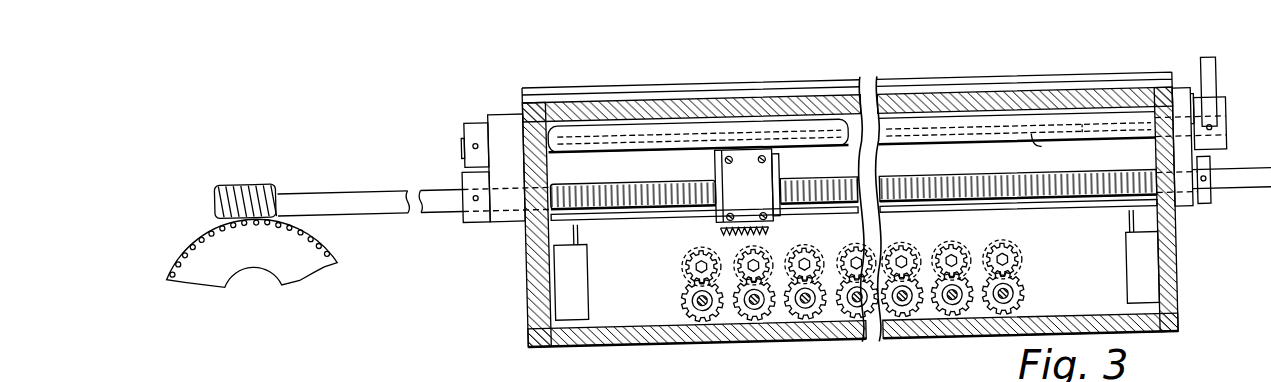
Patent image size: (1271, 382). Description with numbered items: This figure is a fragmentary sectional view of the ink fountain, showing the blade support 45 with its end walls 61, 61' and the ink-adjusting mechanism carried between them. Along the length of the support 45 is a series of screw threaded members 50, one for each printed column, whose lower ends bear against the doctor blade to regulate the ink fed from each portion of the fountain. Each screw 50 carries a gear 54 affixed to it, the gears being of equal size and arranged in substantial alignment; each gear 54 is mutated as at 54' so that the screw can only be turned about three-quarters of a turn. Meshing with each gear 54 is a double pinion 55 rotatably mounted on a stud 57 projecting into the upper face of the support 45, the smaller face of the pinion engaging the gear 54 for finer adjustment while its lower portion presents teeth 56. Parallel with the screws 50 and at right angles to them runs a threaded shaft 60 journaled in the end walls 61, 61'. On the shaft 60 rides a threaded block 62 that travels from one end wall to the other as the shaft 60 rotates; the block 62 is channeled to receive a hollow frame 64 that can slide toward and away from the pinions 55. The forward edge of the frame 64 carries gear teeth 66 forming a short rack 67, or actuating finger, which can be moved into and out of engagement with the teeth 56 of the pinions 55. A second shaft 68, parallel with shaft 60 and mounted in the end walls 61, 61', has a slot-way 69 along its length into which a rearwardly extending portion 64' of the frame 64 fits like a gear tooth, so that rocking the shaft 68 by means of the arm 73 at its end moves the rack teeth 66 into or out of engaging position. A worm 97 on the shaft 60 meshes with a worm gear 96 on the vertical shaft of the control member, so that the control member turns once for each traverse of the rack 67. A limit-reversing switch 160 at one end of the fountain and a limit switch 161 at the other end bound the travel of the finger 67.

The blade support 45 is at (940, 105).
The screw threaded member 50 is at (686, 306).
The gear 54 is at (857, 304).
The mutated portion of gear 54' is at (893, 324).
The double pinion 55 is at (690, 271).
The teeth of lower gear portion 56 is at (686, 262).
The stud 57 is at (689, 276).
The threaded shaft 60 is at (358, 189).
The end wall 61 is at (514, 225).
The end wall 61' is at (1190, 209).
The threaded block 62 is at (778, 184).
The hollow frame 64 is at (701, 187).
The rearwardly extending portion of hollow frame 64' is at (886, 99).
The gear teeth 66 is at (762, 241).
The rack 67 is at (711, 241).
The second shaft 68 is at (1040, 159).
The slot-way 69 is at (1081, 146).
The arm 73 is at (1212, 99).
The worm gear 96 is at (214, 242).
The worm 97 is at (245, 178).
The limit-reversing switch 160 is at (1121, 260).
The limit switch 161 is at (570, 279).